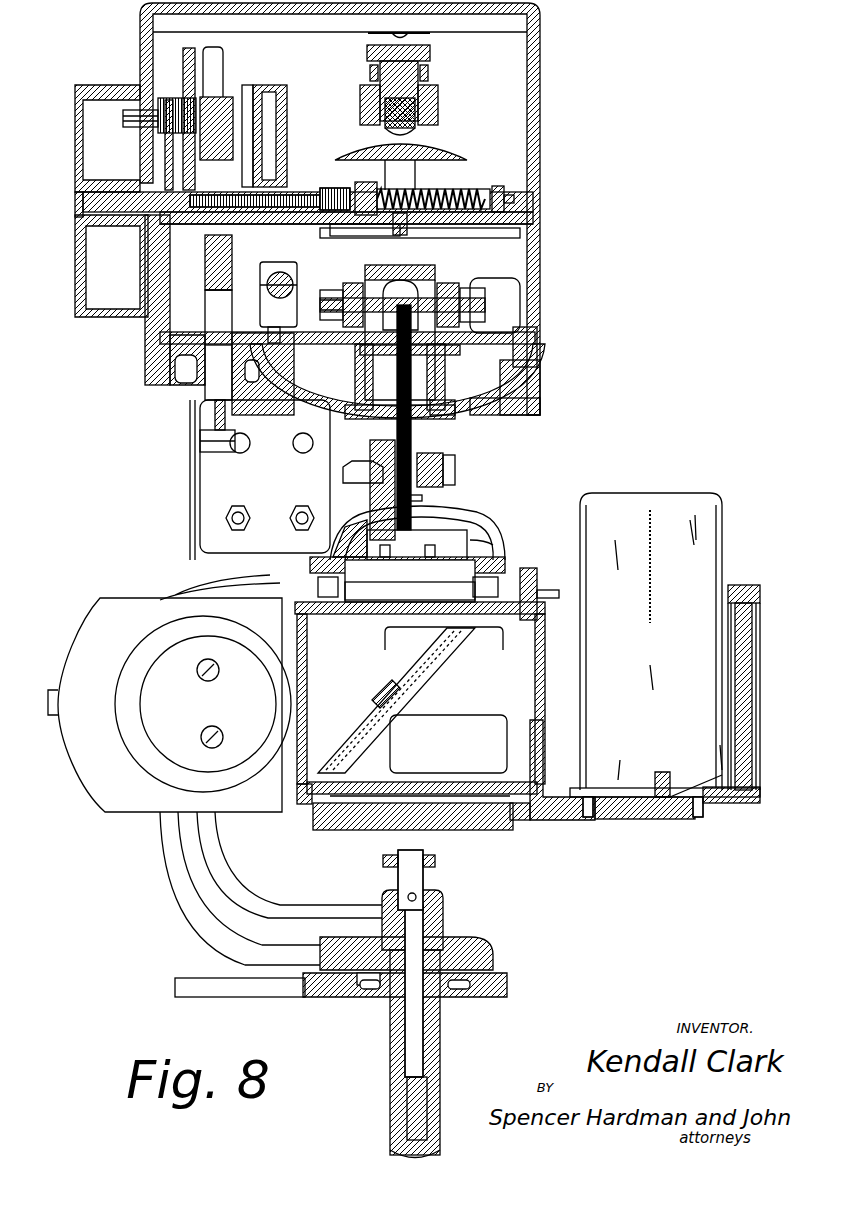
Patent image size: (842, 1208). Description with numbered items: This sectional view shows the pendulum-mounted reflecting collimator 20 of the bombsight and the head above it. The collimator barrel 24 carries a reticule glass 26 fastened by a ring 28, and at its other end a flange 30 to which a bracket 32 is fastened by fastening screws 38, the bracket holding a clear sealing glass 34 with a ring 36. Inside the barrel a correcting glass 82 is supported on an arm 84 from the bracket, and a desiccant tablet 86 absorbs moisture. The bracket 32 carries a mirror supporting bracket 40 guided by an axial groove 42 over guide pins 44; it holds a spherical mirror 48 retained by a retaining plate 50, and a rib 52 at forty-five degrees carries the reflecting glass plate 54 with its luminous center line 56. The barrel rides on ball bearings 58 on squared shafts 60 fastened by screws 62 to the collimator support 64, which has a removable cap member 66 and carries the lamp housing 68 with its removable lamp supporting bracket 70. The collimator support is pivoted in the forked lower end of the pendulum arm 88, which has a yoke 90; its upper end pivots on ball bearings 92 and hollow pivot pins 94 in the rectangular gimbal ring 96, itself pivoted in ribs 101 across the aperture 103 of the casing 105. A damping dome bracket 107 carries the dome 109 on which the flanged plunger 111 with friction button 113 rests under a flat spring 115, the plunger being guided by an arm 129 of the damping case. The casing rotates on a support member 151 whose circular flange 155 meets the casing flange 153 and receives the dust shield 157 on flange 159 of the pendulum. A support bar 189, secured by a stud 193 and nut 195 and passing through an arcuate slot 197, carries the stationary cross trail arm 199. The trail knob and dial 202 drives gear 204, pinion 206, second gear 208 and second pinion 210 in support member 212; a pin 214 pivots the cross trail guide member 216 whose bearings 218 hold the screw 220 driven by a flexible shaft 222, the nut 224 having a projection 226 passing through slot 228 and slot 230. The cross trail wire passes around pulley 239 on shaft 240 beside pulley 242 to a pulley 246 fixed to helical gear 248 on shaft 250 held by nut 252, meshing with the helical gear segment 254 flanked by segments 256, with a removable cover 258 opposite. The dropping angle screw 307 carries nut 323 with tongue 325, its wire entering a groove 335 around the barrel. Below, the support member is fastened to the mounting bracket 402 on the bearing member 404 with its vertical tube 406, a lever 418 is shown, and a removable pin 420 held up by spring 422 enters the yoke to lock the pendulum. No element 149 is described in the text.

The collimator 20 is at (640, 820).
The barrel 24 is at (386, 632).
The reticule glass 26 is at (307, 670).
The ring 28 is at (305, 805).
The flange 30 is at (520, 820).
The bracket 32 is at (543, 820).
The sealing glass 34 is at (543, 660).
The ring 36 is at (530, 600).
The fastening screws 38 is at (548, 598).
The mirror supporting bracket 40 is at (735, 588).
The axial groove 42 is at (740, 803).
The guide pins 44 is at (588, 818).
The mirror 48 is at (752, 635).
The retaining plate 50 is at (760, 664).
The rib 52 is at (664, 797).
The reflecting glass plate 54 is at (605, 493).
The center line 56 is at (652, 510).
The ball bearings 58 is at (495, 578).
The squared shafts 60 is at (410, 591).
The screws 62 is at (340, 555).
The collimator support 64 is at (500, 565).
The removable cap member 66 is at (365, 830).
The lamp housing 68 is at (95, 605).
The lamp supporting bracket 70 is at (168, 652).
The correcting glass 82 is at (380, 728).
The arm 84 is at (465, 715).
The desiccant tablet 86 is at (372, 695).
The pendulum arm 88 is at (455, 518).
The yoke 90 is at (385, 860).
The ball bearings 92 is at (367, 282).
The hollow pivot pins 94 is at (343, 300).
The rectangular gimbal ring 96 is at (343, 290).
The ribs 101 is at (520, 285).
The aperture 103 is at (525, 325).
The casing 105 is at (145, 340).
The damping dome bracket 107 is at (415, 176).
The dome 109 is at (450, 148).
The flanged plunger 111 is at (430, 53).
The friction button 113 is at (415, 130).
The flat spring 115 is at (368, 40).
The arm 129 is at (437, 105).
The spacers 149 is at (370, 72).
The support member 151 is at (540, 400).
The circular flange 153 is at (540, 350).
The circular flange 155 is at (520, 410).
The dust shield 157 is at (480, 415).
The flange 159 is at (455, 410).
The support bar 189 is at (208, 315).
The stud 193 is at (215, 410).
The nut 195 is at (202, 445).
The arcuate slot 197 is at (207, 345).
The cross trail alignment slotted arm 199 is at (515, 216).
The trail knob and dial 202 is at (75, 150).
The gear 204 is at (210, 290).
The pinion 206 is at (173, 100).
The second gear 208 is at (189, 48).
The second pinion 210 is at (212, 215).
The support member 212 is at (213, 77).
The pin 214 is at (250, 85).
The cross trail guide member 216 is at (514, 199).
The bearings 218 is at (500, 190).
The screw 220 is at (480, 195).
The flexible shaft 222 is at (255, 200).
The nut 224 is at (378, 190).
The projection 226 is at (390, 238).
The slot 228 is at (415, 230).
The slot 230 is at (470, 238).
The pulley 239 is at (420, 382).
The shaft 240 is at (460, 352).
The pulley 242 is at (370, 382).
The pulley 246 is at (422, 520).
The helical gear 248 is at (370, 443).
The shaft 250 is at (443, 476).
The nut 252 is at (345, 483).
The helical gear segment 254 is at (465, 530).
The segments 256 is at (472, 540).
The removable cover 258 is at (455, 462).
The dropping angle screw 307 is at (282, 272).
The dropping angle nut 323 is at (270, 262).
The tongue 325 is at (262, 280).
The groove 335 is at (400, 796).
The mounting bracket 402 is at (178, 866).
The bearing member 404 is at (455, 997).
The vertical tube 406 is at (440, 1045).
The lever 418 is at (322, 997).
The removable pin 420 is at (428, 885).
The spring 422 is at (407, 1100).